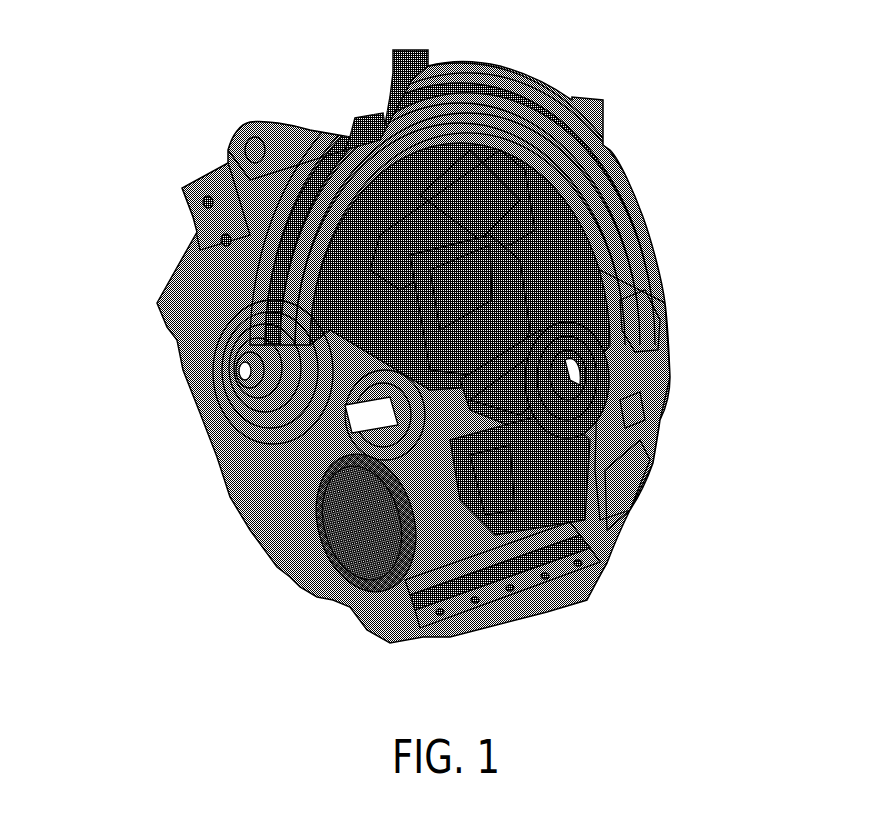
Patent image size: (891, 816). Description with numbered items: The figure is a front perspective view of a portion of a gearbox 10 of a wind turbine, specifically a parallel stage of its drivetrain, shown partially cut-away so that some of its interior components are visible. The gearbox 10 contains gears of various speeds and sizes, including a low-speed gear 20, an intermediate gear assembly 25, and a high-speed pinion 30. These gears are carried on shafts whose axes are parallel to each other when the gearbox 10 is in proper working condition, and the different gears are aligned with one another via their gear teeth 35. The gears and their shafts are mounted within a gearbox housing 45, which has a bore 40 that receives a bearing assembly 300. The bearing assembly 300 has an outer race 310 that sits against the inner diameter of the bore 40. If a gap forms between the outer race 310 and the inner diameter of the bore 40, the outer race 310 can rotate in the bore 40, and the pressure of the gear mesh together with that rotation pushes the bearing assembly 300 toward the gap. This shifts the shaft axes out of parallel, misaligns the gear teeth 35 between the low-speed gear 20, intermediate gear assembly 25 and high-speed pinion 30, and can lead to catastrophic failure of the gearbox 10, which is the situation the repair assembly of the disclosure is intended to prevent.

The gearbox 10 is at (506, 345).
The low-speed gear 20 is at (230, 485).
The intermediate gear assembly 25 is at (270, 563).
The high-speed pinion 30 is at (250, 520).
The gear teeth 35 is at (650, 457).
The bore 40 is at (640, 252).
The gearbox housing 45 is at (638, 205).
The bearing assembly 300 is at (667, 363).
The outer race 310 is at (668, 303).